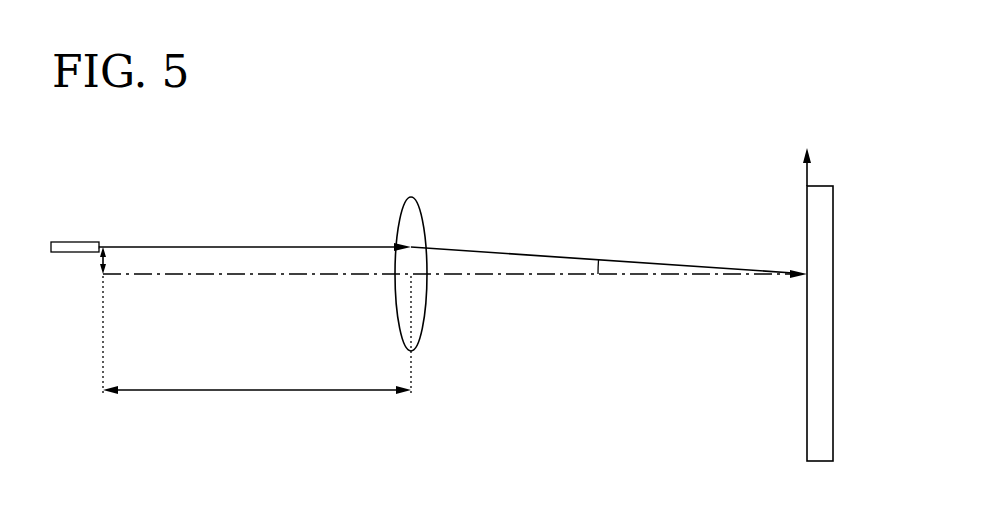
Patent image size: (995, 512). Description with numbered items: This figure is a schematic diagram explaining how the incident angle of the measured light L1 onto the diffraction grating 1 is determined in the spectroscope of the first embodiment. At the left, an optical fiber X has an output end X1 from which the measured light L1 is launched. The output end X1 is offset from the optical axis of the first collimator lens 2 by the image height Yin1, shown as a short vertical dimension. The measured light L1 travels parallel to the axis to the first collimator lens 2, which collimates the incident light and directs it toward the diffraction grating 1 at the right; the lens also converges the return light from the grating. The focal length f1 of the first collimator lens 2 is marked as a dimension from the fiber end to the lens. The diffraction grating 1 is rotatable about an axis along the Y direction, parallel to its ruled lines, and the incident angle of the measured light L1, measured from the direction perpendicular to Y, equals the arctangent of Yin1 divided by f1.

The diffraction grating 1 is at (834, 208).
The first collimator lens 2 is at (423, 212).
The optical fiber X is at (65, 243).
The output end of optical fiber X1 is at (100, 246).
The image height Yin1 is at (105, 261).
The measured light L1 is at (333, 246).
The focal length of first collimator lens f1 is at (257, 335).
The Y direction Y is at (806, 149).